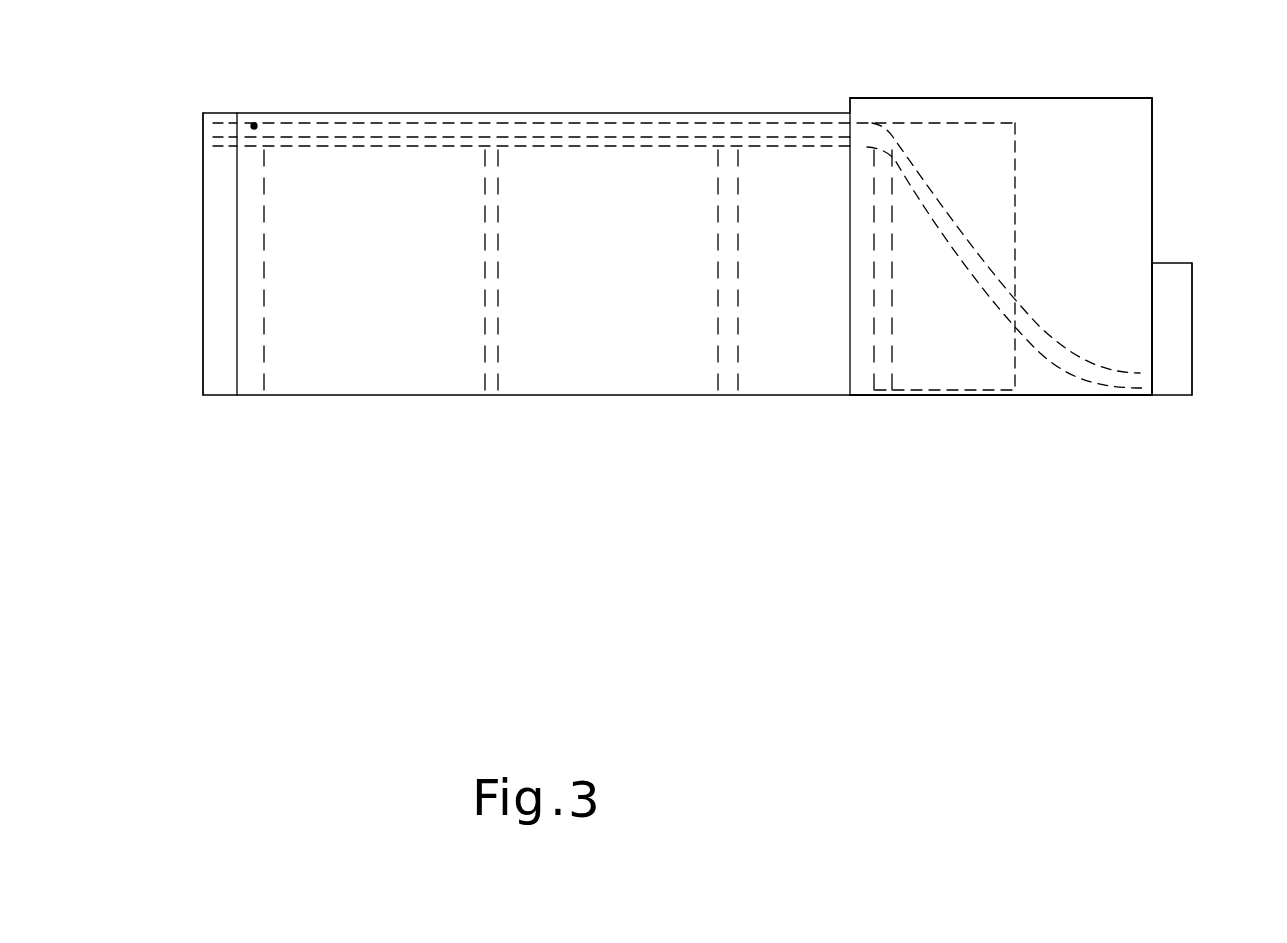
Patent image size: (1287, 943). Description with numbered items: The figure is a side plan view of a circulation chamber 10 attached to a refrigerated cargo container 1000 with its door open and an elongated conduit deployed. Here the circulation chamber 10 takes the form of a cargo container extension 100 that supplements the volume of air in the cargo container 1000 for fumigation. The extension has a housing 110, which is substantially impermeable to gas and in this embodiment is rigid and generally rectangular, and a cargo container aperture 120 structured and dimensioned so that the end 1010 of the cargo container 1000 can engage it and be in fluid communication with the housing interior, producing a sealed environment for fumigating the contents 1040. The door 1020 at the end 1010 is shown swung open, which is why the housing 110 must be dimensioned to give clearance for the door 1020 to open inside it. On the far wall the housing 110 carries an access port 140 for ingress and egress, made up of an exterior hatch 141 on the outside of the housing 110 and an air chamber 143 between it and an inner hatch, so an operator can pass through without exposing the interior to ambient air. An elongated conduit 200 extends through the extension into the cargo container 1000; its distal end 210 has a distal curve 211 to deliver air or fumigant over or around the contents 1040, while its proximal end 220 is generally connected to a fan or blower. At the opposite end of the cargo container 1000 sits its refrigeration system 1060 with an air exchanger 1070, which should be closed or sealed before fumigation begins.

The circulation chamber 10 is at (942, 68).
The cargo container extension 100 is at (1046, 60).
The housing 110 is at (1152, 98).
The cargo container aperture 120 is at (850, 104).
The access port 140 is at (1186, 248).
The exterior hatch 141 is at (1194, 318).
The air chamber 143 is at (1174, 357).
The elongated conduit 200 is at (596, 130).
The distal end 210 is at (330, 97).
The distal curve 211 is at (254, 122).
The proximal end 220 is at (1135, 398).
The cargo container 1000 is at (366, 406).
The end 1010 is at (878, 397).
The door 1020 is at (995, 374).
The contents 1040 is at (383, 168).
The refrigeration system 1060 is at (203, 266).
The air exchanger 1070 is at (212, 137).